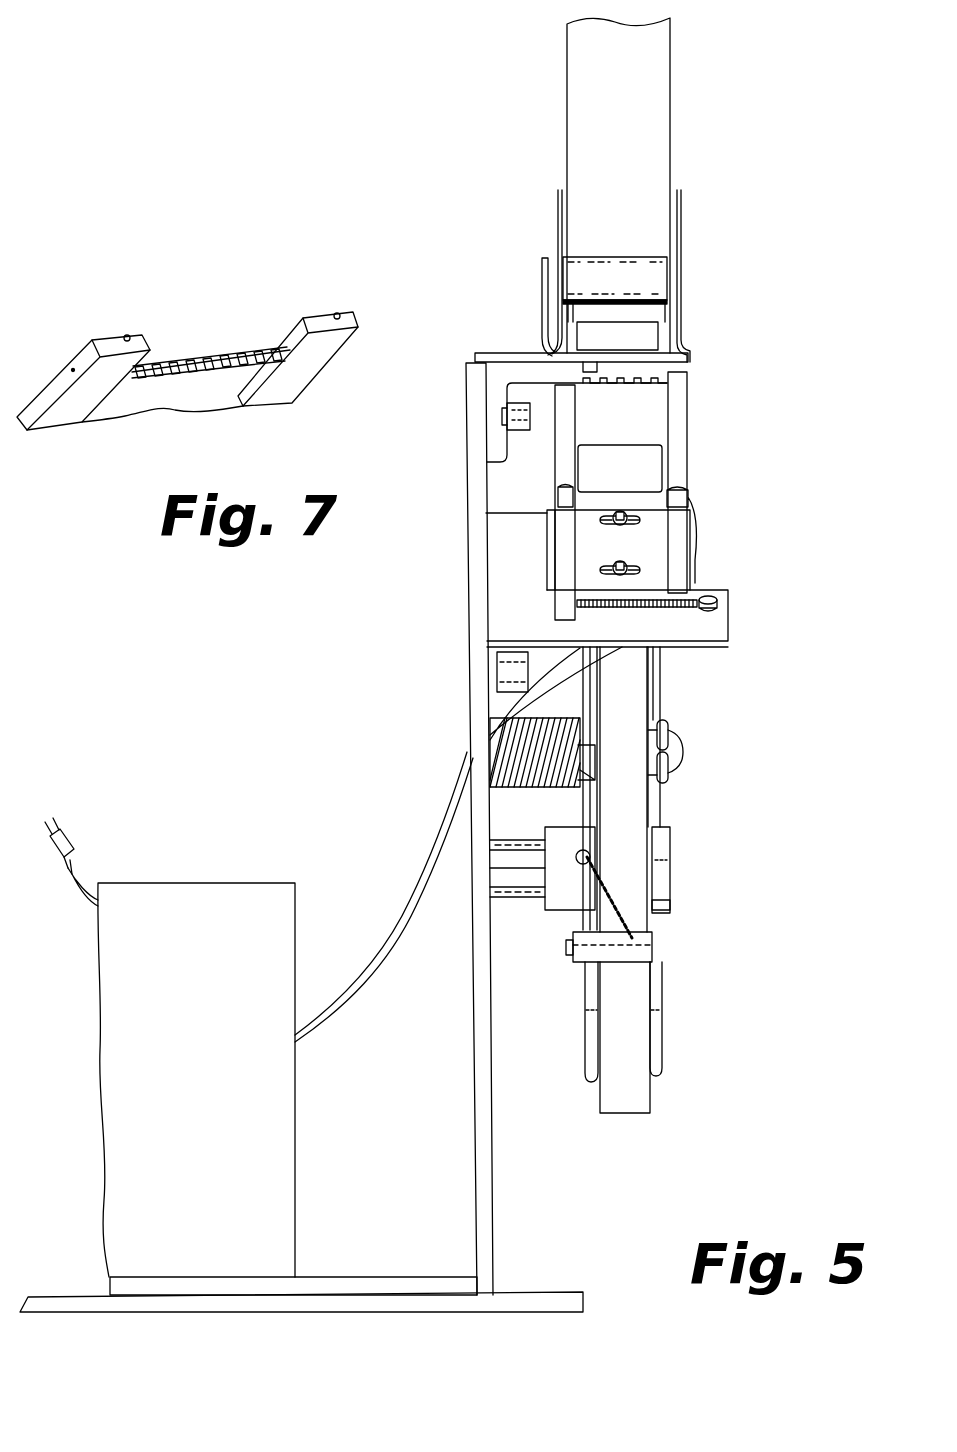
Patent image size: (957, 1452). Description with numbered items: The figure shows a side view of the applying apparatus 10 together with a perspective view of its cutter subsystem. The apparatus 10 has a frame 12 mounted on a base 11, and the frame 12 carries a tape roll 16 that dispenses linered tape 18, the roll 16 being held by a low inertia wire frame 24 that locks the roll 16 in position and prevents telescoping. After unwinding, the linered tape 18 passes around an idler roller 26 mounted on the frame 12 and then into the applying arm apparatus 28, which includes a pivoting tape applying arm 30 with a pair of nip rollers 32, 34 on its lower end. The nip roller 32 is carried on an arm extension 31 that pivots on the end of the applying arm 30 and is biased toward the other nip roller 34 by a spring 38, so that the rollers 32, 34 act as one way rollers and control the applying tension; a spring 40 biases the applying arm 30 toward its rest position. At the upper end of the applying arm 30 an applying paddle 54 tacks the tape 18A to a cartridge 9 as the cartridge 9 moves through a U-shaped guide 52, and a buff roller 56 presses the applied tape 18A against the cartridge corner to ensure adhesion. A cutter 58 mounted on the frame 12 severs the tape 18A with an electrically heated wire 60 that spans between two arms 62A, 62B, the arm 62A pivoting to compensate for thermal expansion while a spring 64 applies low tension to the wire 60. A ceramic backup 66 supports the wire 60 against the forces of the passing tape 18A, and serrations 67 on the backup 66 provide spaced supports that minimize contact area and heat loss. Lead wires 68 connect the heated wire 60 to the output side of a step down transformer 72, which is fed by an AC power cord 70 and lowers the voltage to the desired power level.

In FIG. 5, the applying apparatus 10 is at (482, 95).
In FIG. 5, the cartridge 9 is at (654, 118).
In FIG. 5, the guide 52 is at (680, 217).
In FIG. 5, the buff roller 56 is at (647, 277).
In FIG. 5, the applying paddle 54 is at (647, 337).
In FIG. 5, the tape 18A is at (630, 372).
In FIG. 5, the spring 64 is at (640, 421).
In FIG. 5, the cutter 58 is at (705, 465).
In FIG. 7, the cutter 58 is at (343, 378).
In FIG. 5, the ceramic backup 66 is at (587, 459).
In FIG. 7, the ceramic backup 66 is at (213, 397).
In FIG. 5, the arm 62B is at (680, 553).
In FIG. 7, the arm 62B is at (90, 350).
In FIG. 5, the arm 62A is at (565, 567).
In FIG. 7, the arm 62A is at (347, 337).
In FIG. 5, the tape applying arm 30 is at (583, 700).
In FIG. 5, the applying arm apparatus 28 is at (715, 748).
In FIG. 5, the linered tape 18 is at (630, 800).
In FIG. 5, the spring 40 is at (528, 779).
In FIG. 5, the lead wires 68 is at (425, 825).
In FIG. 5, the AC power cord 70 is at (70, 868).
In FIG. 5, the step down transformer 72 is at (223, 897).
In FIG. 5, the idler roller 26 is at (662, 864).
In FIG. 5, the nip roller 34 is at (658, 920).
In FIG. 5, the spring 38 is at (610, 900).
In FIG. 5, the nip roller 32 is at (658, 972).
In FIG. 5, the arm extension 31 is at (585, 950).
In FIG. 5, the tape roll 16 is at (630, 1023).
In FIG. 5, the wire frame 24 is at (663, 1060).
In FIG. 5, the frame 12 is at (483, 1168).
In FIG. 5, the base 11 is at (200, 1302).
In FIG. 7, the electrically heated wire 60 is at (217, 354).
In FIG. 7, the serrations 67 is at (183, 374).